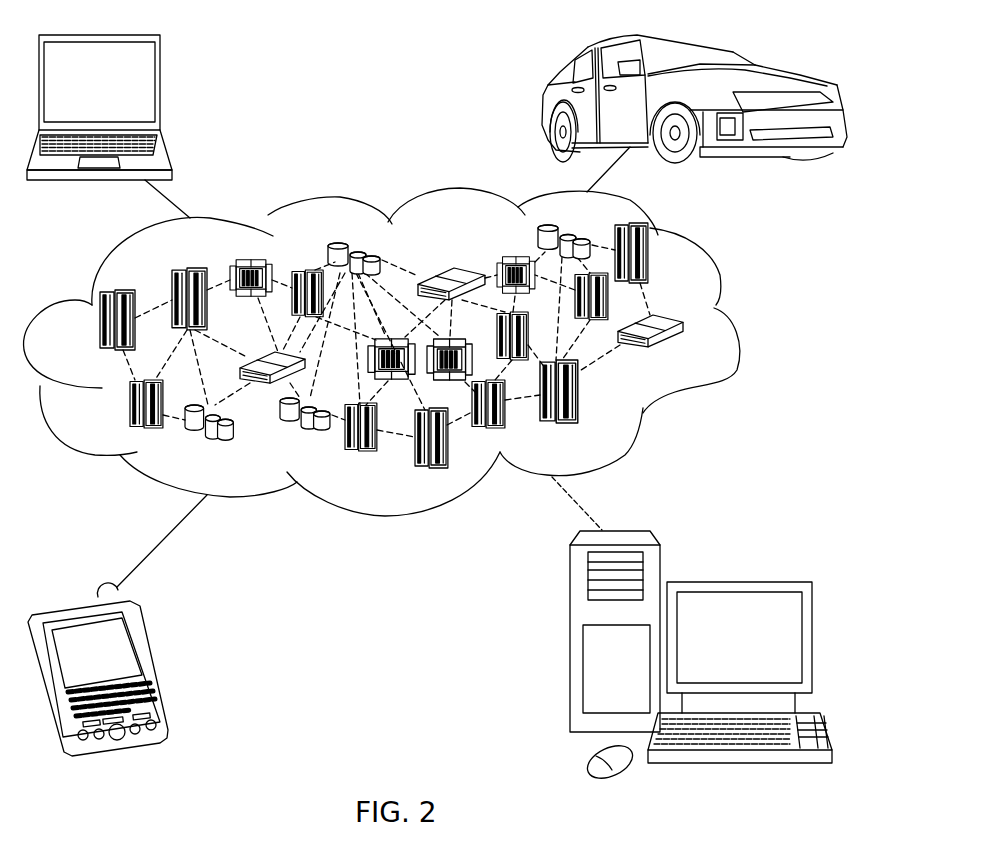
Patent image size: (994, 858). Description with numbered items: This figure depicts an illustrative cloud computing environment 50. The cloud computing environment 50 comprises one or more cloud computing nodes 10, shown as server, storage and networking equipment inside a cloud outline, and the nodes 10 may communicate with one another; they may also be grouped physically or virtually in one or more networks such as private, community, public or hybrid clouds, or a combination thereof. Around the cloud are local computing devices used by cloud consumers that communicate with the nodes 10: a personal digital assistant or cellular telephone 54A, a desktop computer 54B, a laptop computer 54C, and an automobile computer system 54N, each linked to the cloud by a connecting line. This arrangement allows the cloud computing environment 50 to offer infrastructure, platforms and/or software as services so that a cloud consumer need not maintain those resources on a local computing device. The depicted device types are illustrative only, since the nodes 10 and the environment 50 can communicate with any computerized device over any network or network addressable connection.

The cloud computing node 10 is at (686, 355).
The cloud computing environment 50 is at (738, 327).
The personal digital assistant (PDA) or cellular telephone 54A is at (155, 668).
The desktop computer 54B is at (737, 582).
The laptop computer 54C is at (163, 83).
The automobile computer system 54N is at (545, 105).